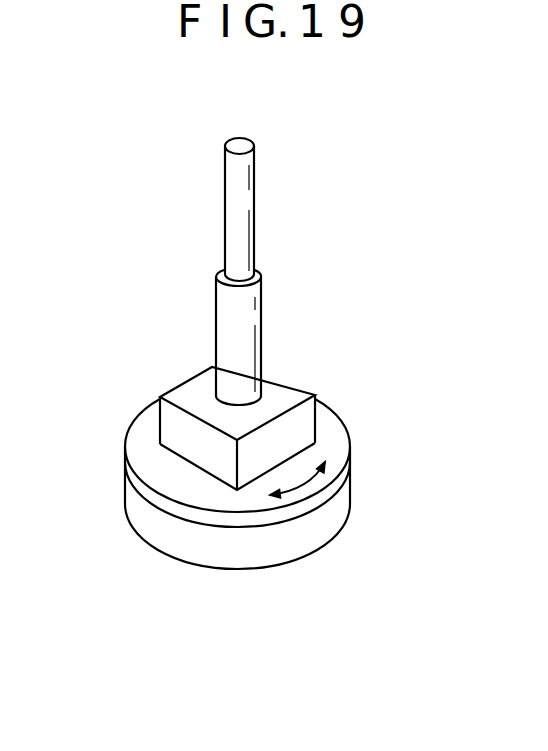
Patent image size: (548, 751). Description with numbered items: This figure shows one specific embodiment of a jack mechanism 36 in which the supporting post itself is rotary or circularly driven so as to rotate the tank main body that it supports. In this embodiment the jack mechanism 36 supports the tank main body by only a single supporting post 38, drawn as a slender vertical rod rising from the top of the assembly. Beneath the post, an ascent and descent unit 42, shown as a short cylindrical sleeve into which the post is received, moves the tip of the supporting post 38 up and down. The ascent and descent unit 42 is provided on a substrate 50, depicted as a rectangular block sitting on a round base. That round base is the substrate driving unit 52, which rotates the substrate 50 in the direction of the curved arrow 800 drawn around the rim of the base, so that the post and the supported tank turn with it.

The jack mechanism 36 is at (268, 265).
The supporting post 38 is at (228, 230).
The ascent and descent unit 42 is at (280, 378).
The substrate 50 is at (145, 438).
The substrate driving unit 52 is at (163, 542).
The arrow 800 is at (308, 477).